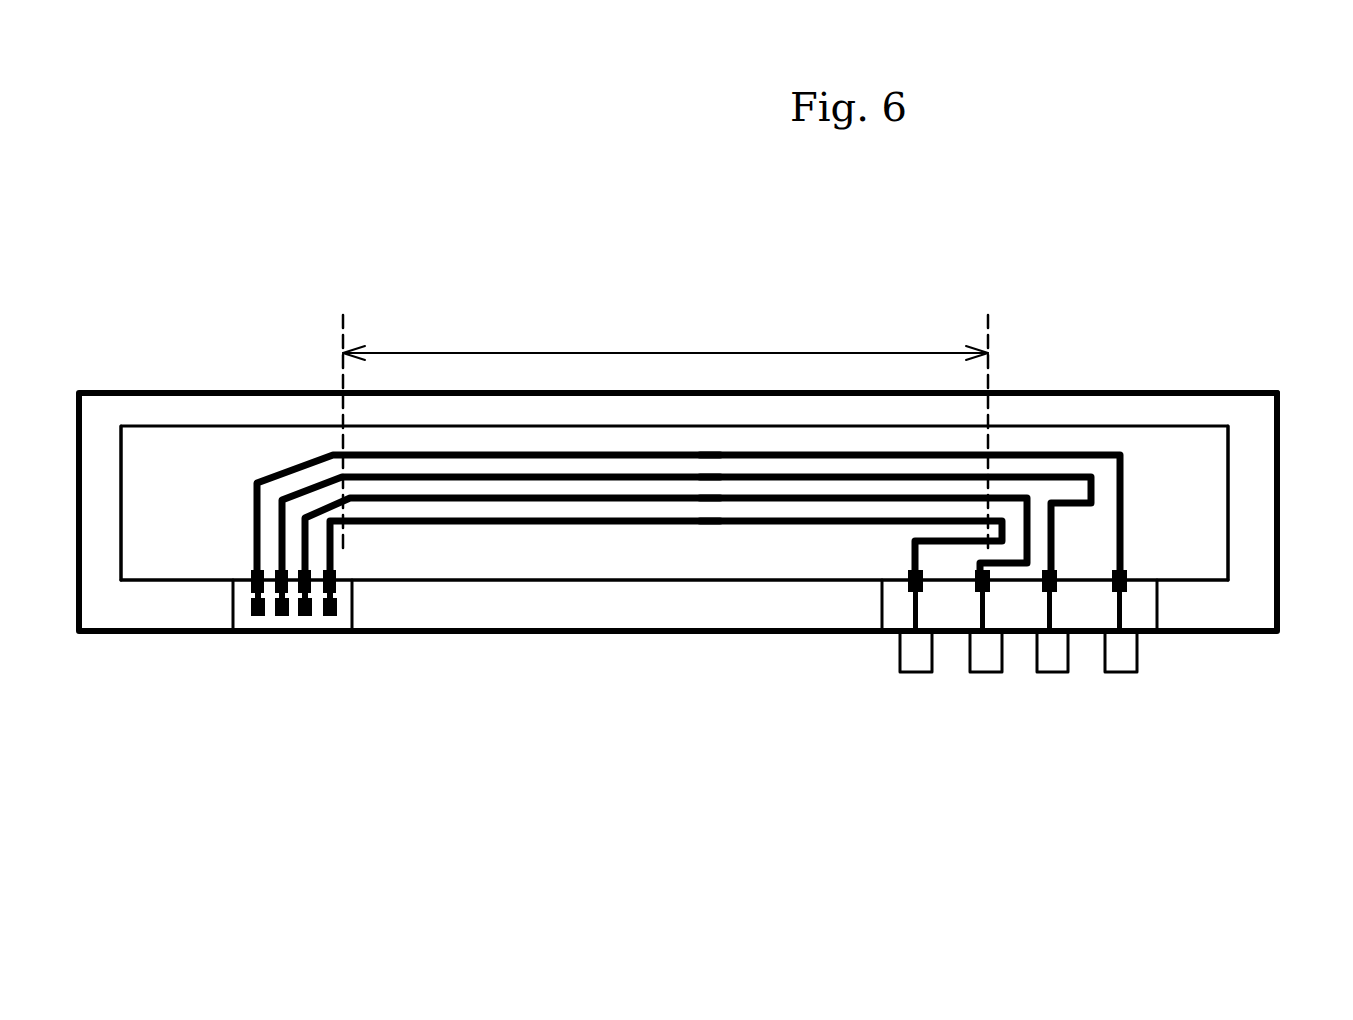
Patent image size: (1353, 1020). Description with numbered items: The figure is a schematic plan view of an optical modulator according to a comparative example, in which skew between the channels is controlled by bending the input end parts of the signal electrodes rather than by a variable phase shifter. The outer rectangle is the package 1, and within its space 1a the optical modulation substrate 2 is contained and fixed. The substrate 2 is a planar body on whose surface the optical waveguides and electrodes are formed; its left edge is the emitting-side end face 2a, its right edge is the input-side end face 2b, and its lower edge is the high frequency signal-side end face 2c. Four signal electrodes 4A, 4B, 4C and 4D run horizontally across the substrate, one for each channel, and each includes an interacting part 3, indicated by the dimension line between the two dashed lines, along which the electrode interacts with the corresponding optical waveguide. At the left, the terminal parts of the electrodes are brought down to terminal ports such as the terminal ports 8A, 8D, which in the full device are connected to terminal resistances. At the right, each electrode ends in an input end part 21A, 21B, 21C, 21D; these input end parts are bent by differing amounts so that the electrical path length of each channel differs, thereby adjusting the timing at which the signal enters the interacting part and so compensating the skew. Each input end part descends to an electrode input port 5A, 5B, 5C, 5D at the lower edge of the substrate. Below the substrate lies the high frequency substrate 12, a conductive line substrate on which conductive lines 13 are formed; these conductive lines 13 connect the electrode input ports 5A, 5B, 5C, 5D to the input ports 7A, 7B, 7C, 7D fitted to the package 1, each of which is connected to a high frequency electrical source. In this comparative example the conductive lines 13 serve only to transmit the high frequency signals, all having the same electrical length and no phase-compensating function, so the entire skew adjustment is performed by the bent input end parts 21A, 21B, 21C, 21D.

The package 1 is at (1155, 390).
The space 1a is at (1105, 407).
The optical modulation substrate 2 is at (1208, 432).
The emitting-side end face 2a is at (120, 447).
The input-side end face 2b is at (1228, 457).
The high frequency signal-side end face 2c is at (705, 582).
The interacting part 3 is at (797, 353).
The signal electrode 4A is at (600, 522).
The signal electrode 4B is at (545, 500).
The signal electrode 4C is at (577, 478).
The signal electrode 4D is at (512, 455).
The electrode input port 5A is at (908, 570).
The electrode input port 5B is at (975, 585).
The electrode input port 5C is at (1050, 572).
The electrode input port 5D is at (1125, 573).
The input port 7A is at (915, 660).
The input port 7B is at (995, 670).
The input port 7C is at (1055, 663).
The input port 7D is at (1125, 663).
The terminal port 8A is at (333, 572).
The terminal port 8D is at (252, 572).
The high frequency substrate 12 is at (1147, 600).
The conductive line 13 is at (913, 607).
The input end part 21A is at (930, 543).
The input end part 21B is at (1013, 500).
The input end part 21C is at (1093, 482).
The input end part 21D is at (1123, 513).